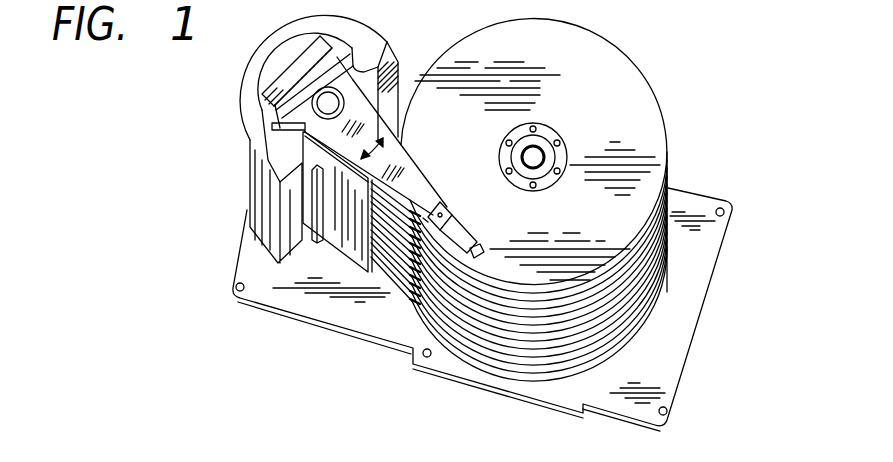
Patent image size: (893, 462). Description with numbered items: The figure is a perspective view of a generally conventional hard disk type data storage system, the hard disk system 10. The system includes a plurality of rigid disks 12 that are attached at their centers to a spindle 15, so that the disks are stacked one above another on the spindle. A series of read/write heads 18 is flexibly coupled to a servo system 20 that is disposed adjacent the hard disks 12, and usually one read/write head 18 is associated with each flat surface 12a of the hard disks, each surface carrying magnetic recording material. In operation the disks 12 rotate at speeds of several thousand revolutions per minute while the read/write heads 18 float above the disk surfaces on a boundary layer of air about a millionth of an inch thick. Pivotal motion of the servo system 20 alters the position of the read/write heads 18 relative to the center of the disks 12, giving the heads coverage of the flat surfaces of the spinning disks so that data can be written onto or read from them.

The hard disk system 10 is at (683, 82).
The rigid disks 12 is at (578, 199).
The flat surface 12a is at (647, 135).
The spindle 15 is at (533, 157).
The read/write heads 18 is at (477, 250).
The servo system 20 is at (303, 196).